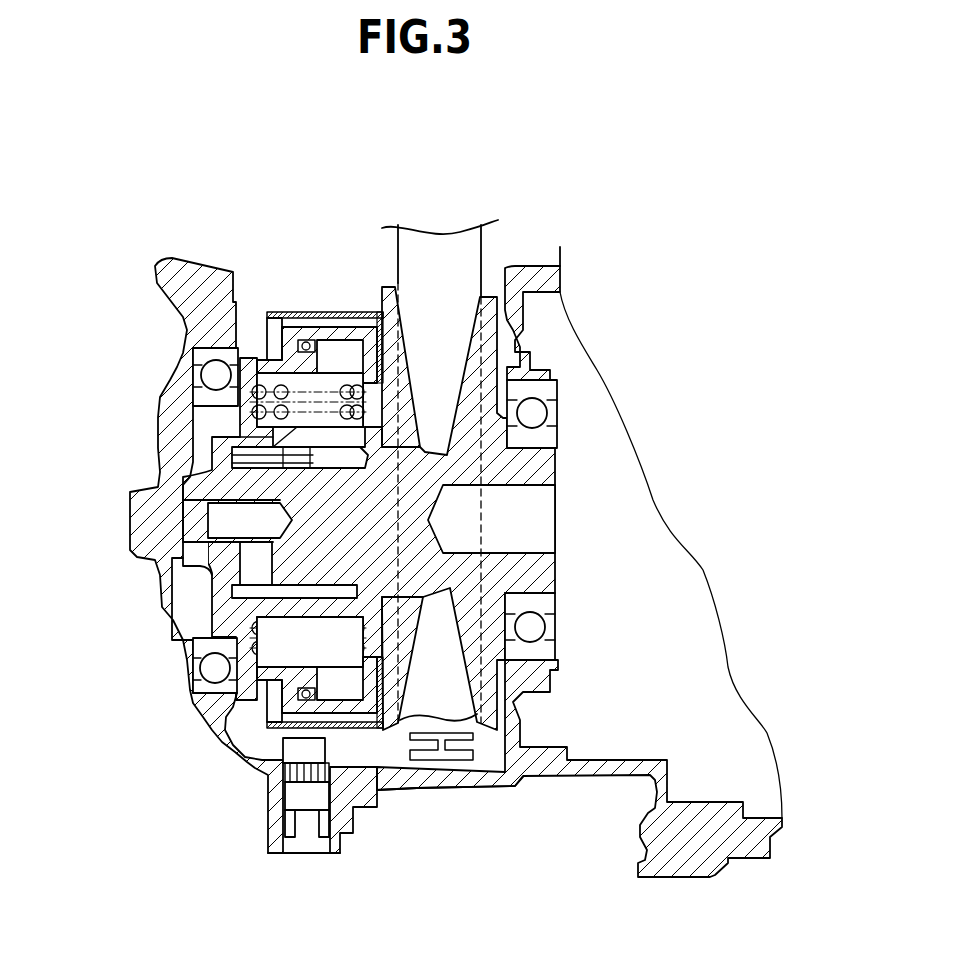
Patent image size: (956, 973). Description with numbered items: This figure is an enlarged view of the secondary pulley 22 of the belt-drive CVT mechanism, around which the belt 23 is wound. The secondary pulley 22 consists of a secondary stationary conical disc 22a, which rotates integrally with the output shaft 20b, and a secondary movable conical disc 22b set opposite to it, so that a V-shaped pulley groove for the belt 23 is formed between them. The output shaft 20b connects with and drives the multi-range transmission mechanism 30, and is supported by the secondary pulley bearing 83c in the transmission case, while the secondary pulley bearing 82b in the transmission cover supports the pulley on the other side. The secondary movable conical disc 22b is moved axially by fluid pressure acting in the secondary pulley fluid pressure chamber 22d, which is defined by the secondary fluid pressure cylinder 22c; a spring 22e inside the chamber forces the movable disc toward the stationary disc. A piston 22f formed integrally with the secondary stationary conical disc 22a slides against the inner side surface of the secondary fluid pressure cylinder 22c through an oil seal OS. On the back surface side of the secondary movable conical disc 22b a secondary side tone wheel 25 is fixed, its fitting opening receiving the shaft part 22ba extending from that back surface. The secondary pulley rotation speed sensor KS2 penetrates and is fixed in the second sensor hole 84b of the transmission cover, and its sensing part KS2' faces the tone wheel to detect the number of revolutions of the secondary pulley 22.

The secondary pulley 22 is at (362, 270).
The belt 23 is at (484, 282).
The secondary stationary conical disc 22a is at (468, 256).
The secondary movable conical disc 22b is at (383, 297).
The shaft part 22ba is at (262, 433).
The secondary fluid pressure cylinder 22c is at (345, 708).
The secondary pulley fluid pressure chamber 22d is at (300, 665).
The spring 22e is at (300, 645).
The piston 22f is at (250, 357).
The oil seal OS is at (305, 340).
The multi-range transmission mechanism 30 is at (632, 529).
The output shaft 20b is at (523, 572).
The secondary pulley bearing 83c is at (547, 653).
The secondary pulley bearing 82b is at (214, 666).
The secondary pulley rotation speed sensor KS2 is at (245, 800).
The sensing part KS2' is at (225, 758).
The secondary side tone wheel 25 is at (408, 790).
The second sensor hole 84b is at (280, 845).